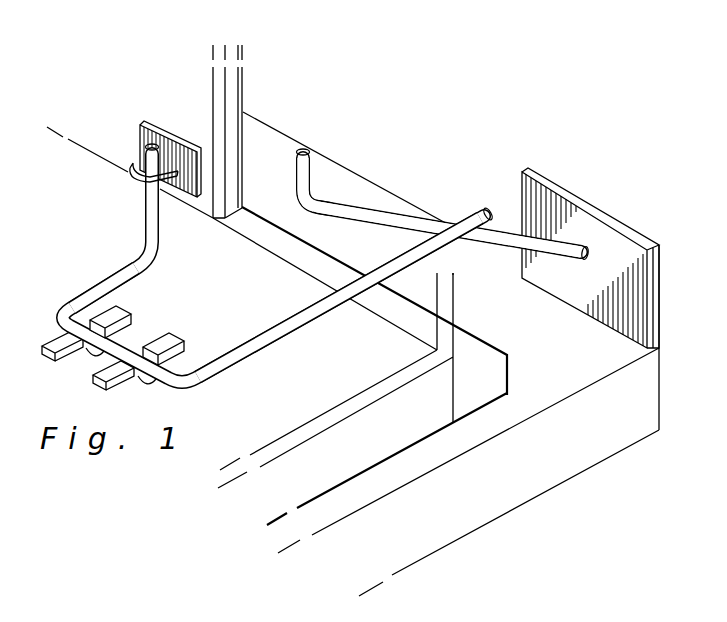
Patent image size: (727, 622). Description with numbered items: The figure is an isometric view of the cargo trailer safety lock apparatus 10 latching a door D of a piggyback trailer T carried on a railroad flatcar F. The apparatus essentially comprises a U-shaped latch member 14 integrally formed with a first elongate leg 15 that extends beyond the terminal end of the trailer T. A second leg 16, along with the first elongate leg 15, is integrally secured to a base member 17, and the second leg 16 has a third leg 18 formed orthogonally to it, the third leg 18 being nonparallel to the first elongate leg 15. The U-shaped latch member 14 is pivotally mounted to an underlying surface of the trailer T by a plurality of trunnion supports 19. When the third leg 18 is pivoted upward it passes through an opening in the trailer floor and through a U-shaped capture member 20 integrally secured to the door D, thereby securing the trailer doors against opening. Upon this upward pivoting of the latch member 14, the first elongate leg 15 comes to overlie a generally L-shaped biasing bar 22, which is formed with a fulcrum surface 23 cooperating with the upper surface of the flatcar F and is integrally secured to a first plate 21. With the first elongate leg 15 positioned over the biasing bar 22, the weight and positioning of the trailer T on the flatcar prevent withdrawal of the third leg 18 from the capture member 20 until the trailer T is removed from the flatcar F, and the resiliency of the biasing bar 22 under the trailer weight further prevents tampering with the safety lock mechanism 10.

The cargo trailer safety lock apparatus 10 is at (353, 122).
The "U" shaped latch member 14 is at (278, 280).
The first elongate leg 15 is at (264, 330).
The second leg 16 is at (118, 273).
The base member 17 is at (133, 336).
The third leg 18 is at (142, 220).
The trunnion supports 19 is at (76, 364).
The "U" shaped capture member 20 is at (130, 174).
The first plate 21 is at (589, 206).
The "L" shaped biasing bar 22 is at (428, 204).
The fulcrum surface 23 is at (298, 210).
The door D is at (244, 47).
The trailer T is at (403, 440).
The railroad flatcar F is at (587, 462).